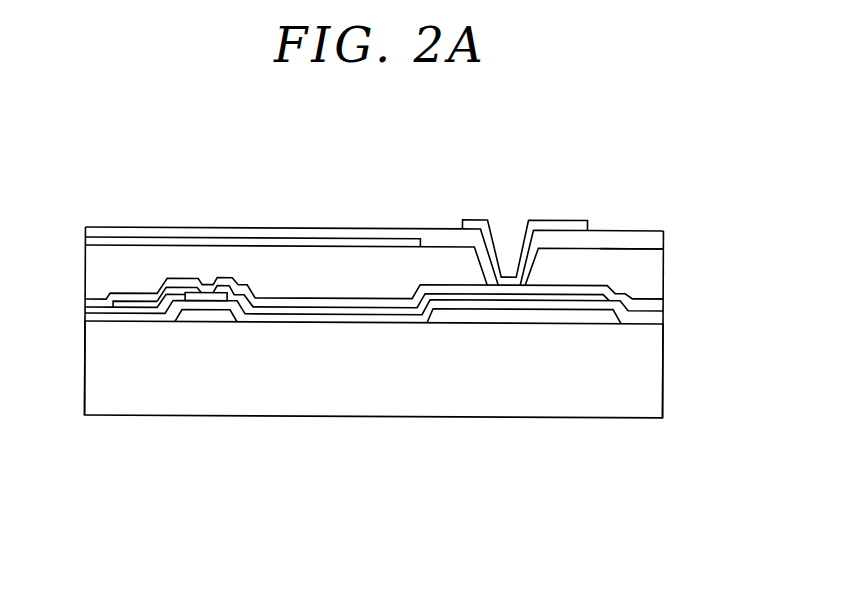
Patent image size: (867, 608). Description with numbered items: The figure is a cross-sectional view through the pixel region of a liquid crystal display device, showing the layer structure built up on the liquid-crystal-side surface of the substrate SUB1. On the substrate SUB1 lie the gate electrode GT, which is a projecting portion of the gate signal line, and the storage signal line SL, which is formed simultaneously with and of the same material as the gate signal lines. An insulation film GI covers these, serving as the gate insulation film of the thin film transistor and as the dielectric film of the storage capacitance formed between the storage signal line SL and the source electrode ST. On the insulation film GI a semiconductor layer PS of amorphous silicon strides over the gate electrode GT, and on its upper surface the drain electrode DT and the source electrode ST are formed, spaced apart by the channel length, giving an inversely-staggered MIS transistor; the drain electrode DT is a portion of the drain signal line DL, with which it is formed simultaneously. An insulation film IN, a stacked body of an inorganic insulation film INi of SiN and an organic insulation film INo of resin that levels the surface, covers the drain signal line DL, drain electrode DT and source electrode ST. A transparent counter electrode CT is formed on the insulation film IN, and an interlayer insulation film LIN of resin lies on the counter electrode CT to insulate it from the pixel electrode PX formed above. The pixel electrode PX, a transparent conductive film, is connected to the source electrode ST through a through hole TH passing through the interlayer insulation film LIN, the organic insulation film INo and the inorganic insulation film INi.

The substrate SUB1 is at (117, 398).
The gate electrode GT is at (227, 312).
The storage signal line SL is at (522, 317).
The insulation film GI is at (355, 317).
The semiconductor layer PS is at (201, 296).
The drain signal line DL is at (133, 299).
The drain electrode DT is at (185, 284).
The source electrode ST is at (380, 300).
The inorganic insulation film INi is at (648, 302).
The organic insulation film INo is at (648, 272).
The insulation film IN is at (741, 257).
The counter electrode CT is at (250, 242).
The interlayer insulation film LIN is at (325, 240).
The through hole TH is at (479, 262).
The pixel electrode PX is at (554, 217).